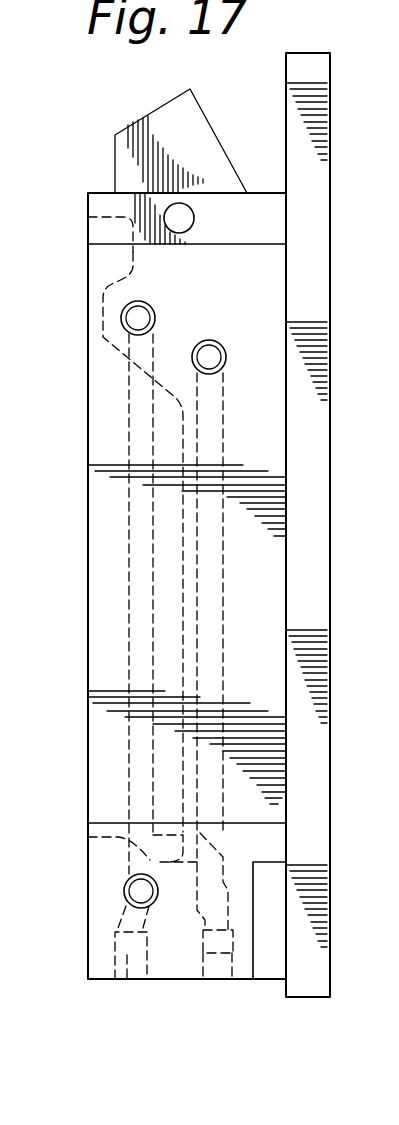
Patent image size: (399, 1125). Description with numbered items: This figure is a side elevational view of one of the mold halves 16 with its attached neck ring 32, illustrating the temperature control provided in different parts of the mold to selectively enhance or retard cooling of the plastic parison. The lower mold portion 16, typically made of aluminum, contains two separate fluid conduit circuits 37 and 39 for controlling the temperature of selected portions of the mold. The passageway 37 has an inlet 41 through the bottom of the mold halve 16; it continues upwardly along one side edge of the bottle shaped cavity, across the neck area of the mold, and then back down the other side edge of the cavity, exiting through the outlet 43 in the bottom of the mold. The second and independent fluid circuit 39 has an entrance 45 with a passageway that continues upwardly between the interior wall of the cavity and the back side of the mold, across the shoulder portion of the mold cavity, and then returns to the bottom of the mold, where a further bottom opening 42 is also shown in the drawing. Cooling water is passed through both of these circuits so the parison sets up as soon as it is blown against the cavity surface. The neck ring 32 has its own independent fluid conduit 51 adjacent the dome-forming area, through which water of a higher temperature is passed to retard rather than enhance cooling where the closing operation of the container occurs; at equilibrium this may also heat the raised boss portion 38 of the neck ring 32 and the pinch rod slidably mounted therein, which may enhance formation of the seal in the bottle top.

The mold halve 16 is at (97, 461).
The neck ring 32 is at (98, 193).
The raised boss portion 38 is at (193, 110).
The fluid conduit 51 is at (185, 217).
The fluid conduit circuit 37 is at (150, 522).
The second fluid circuit 39 is at (220, 522).
The inlet 41 is at (128, 980).
The outlet 43 is at (128, 980).
The entrance 45 is at (128, 980).
The drain port 42 is at (224, 980).